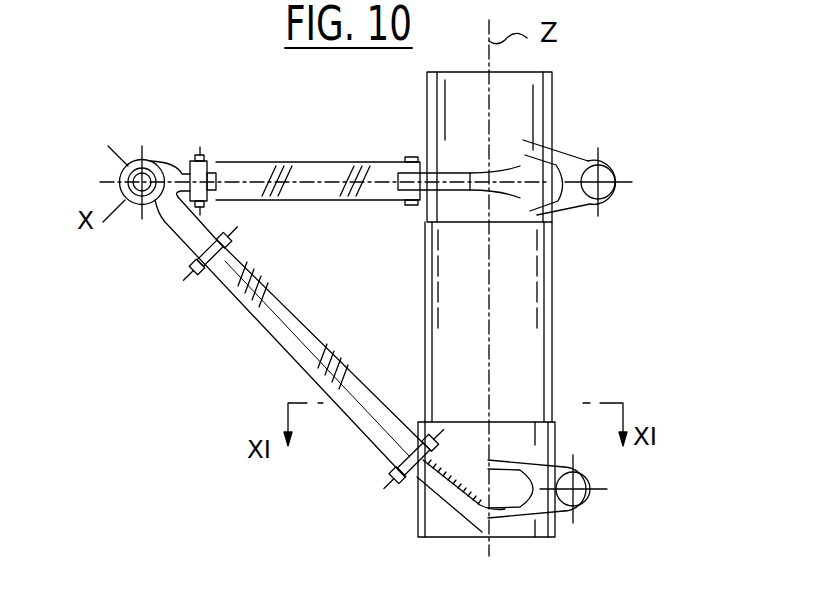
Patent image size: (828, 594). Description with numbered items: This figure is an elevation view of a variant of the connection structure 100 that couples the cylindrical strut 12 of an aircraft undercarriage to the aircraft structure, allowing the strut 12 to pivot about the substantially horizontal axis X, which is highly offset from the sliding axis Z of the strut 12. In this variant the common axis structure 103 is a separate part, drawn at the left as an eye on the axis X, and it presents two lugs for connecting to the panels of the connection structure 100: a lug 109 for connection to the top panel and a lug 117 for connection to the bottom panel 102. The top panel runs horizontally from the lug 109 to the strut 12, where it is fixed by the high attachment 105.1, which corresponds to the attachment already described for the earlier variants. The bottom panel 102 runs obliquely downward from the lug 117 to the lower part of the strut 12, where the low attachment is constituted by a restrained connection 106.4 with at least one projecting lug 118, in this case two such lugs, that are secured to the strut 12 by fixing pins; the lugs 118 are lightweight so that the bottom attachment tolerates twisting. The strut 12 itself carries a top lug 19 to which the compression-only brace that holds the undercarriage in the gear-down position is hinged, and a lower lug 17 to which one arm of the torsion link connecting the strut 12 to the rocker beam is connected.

The strut 12 is at (528, 303).
The lug 17 is at (590, 508).
The top lug 19 is at (612, 166).
The connection structure 100 is at (308, 380).
The bottom panel 102 is at (290, 337).
The common axis structure 103 is at (152, 159).
The high attachment 105.1 is at (412, 215).
The restrained connection 106.4 is at (378, 472).
The lug 109 is at (190, 158).
The lug 117 is at (177, 224).
The projecting lug 118 is at (425, 490).